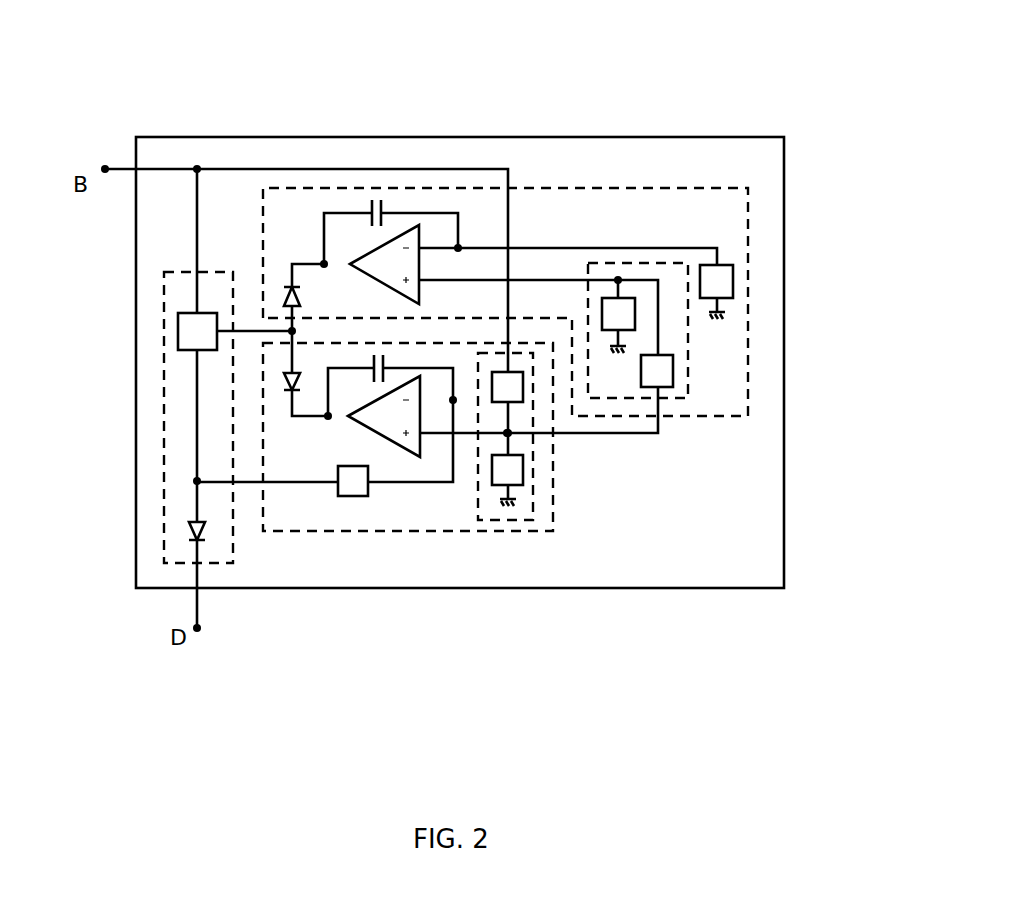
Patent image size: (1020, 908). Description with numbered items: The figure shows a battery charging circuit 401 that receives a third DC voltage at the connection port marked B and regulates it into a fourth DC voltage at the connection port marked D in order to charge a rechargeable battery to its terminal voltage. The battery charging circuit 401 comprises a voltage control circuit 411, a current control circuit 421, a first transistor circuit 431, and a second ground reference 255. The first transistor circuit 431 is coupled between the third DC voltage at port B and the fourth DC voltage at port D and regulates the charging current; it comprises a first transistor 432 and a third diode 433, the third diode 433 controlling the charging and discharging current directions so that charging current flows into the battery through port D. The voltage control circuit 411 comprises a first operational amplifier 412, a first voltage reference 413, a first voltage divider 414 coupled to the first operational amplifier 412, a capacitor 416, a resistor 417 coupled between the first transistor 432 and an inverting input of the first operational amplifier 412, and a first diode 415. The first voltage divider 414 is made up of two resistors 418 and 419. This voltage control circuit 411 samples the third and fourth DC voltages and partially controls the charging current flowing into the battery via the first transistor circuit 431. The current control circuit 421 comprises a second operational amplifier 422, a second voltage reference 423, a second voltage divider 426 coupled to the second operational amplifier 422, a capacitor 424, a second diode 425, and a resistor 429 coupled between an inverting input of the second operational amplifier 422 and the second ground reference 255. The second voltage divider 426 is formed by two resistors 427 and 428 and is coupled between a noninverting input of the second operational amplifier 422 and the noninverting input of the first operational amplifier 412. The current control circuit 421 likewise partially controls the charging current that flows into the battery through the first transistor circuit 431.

The battery charging circuit 401 is at (537, 134).
The current control circuit 421 is at (686, 187).
The capacitor 424 is at (385, 205).
The second operational amplifier 422 is at (385, 285).
The second diode 425 is at (291, 286).
The second voltage reference 423 is at (615, 276).
The resistor 428 is at (625, 298).
The resistor 429 is at (735, 298).
The second ground reference 255 is at (720, 318).
The second voltage divider 426 is at (692, 372).
The resistor 427 is at (673, 387).
The first transistor circuit 431 is at (160, 292).
The first transistor 432 is at (178, 343).
The third diode 433 is at (188, 531).
The first diode 415 is at (282, 381).
The capacitor 416 is at (372, 372).
The first operational amplifier 412 is at (393, 448).
The resistor 417 is at (345, 497).
The voltage control circuit 411 is at (531, 533).
The first voltage divider 414 is at (490, 532).
The resistor 418 is at (523, 402).
The resistor 419 is at (523, 486).
The first voltage reference 413 is at (513, 439).